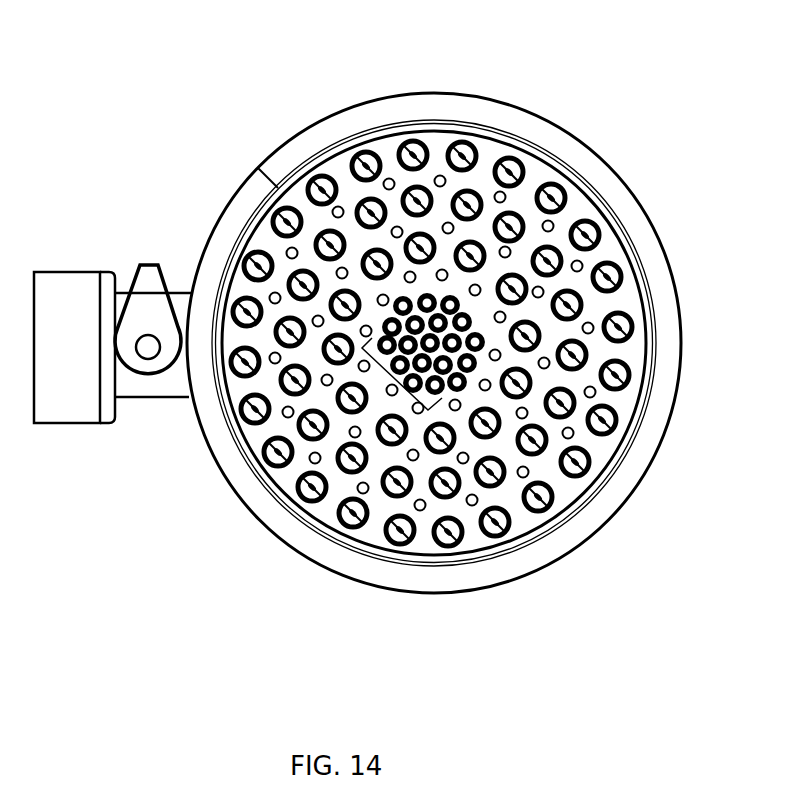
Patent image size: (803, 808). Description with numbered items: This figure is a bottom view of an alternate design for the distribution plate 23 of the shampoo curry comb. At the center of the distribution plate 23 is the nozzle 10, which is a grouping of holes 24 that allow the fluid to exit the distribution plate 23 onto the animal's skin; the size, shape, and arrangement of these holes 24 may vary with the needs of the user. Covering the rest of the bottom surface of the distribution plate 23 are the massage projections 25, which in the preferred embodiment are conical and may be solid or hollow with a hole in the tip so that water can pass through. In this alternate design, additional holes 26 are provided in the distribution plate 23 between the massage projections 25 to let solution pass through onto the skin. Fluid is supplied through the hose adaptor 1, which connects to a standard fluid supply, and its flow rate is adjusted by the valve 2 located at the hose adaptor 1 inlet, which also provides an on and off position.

The hose adaptor 1 is at (68, 270).
The valve 2 is at (148, 264).
The nozzle 10 is at (397, 381).
The distribution plate 23 is at (663, 240).
The hole 24 is at (432, 345).
The massage projections 25 is at (572, 400).
The additional holes 26 is at (340, 206).